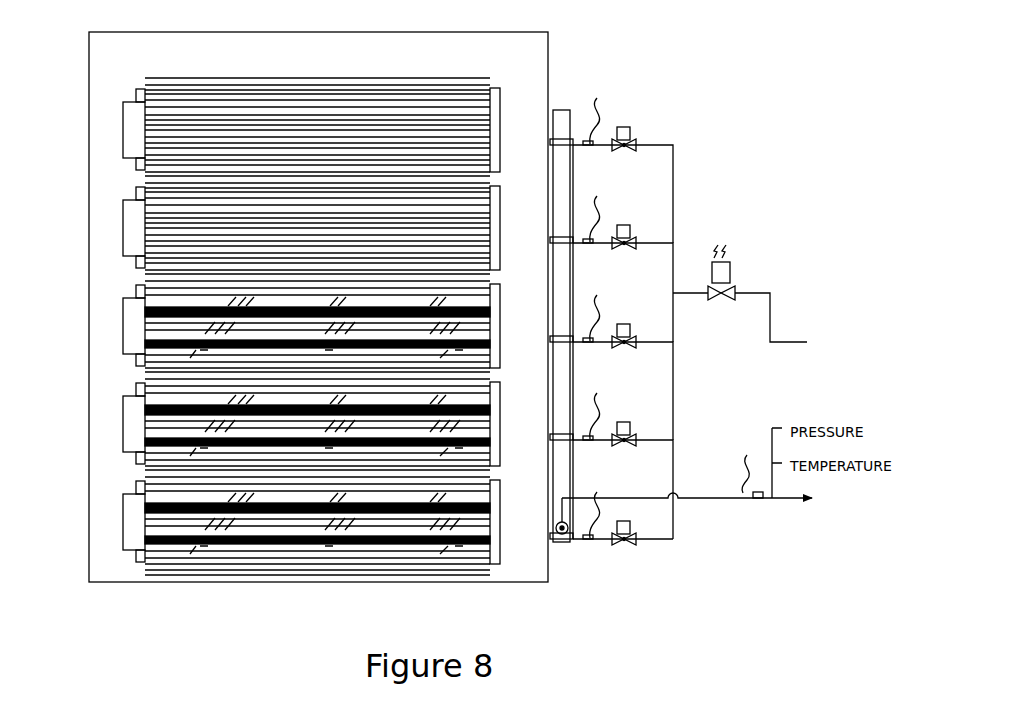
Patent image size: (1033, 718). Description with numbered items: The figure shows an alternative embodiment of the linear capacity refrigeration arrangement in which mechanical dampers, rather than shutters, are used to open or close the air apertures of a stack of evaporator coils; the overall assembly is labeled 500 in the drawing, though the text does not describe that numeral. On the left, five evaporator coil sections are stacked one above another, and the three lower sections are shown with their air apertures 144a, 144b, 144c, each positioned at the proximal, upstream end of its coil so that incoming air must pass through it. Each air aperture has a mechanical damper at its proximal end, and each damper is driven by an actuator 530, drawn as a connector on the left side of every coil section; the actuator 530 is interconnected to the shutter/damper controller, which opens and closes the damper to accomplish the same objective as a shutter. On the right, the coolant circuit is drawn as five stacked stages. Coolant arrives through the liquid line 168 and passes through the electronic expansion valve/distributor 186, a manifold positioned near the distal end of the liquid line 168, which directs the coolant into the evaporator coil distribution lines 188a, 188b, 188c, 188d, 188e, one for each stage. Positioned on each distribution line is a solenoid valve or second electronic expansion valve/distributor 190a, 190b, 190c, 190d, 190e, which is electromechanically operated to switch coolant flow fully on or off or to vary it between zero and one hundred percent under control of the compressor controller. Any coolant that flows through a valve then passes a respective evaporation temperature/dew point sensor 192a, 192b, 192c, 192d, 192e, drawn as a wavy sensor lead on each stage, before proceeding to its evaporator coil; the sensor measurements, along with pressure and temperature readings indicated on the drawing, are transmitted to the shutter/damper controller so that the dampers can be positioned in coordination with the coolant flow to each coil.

The multi-stage reactor vessel 500 is at (183, 123).
The actuator 530 is at (122, 222).
The air aperture 144a is at (240, 497).
The air aperture 144b is at (283, 400).
The air aperture 144c is at (228, 300).
The electronic expansion valve/distributor 186 is at (736, 272).
The liquid line 168 is at (805, 342).
The evaporator coil distribution line 188a is at (675, 520).
The evaporator coil distribution line 188b is at (675, 425).
The evaporator coil distribution line 188c is at (675, 328).
The evaporator coil distribution line 188d is at (675, 262).
The evaporator coil distribution line 188e is at (665, 142).
The solenoid valve or second electronic expansion valve/distributor 190a is at (636, 539).
The solenoid valve or second electronic expansion valve/distributor 190b is at (637, 441).
The solenoid valve or second electronic expansion valve/distributor 190c is at (640, 325).
The solenoid valve or second electronic expansion valve/distributor 190d is at (638, 218).
The solenoid valve or second electronic expansion valve/distributor 190e is at (632, 118).
The evaporation temperature/dew point sensor 192a is at (587, 545).
The evaporation temperature/dew point sensor 192b is at (608, 403).
The evaporation temperature/dew point sensor 192c is at (605, 305).
The evaporation temperature/dew point sensor 192d is at (604, 208).
The evaporation temperature/dew point sensor 192e is at (597, 98).